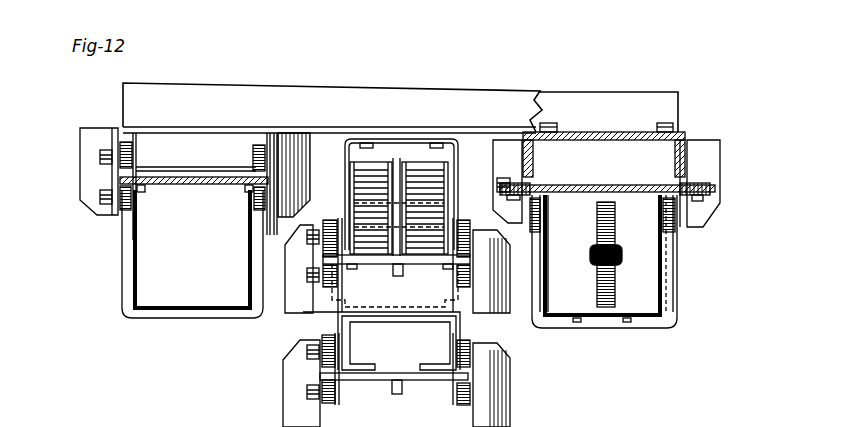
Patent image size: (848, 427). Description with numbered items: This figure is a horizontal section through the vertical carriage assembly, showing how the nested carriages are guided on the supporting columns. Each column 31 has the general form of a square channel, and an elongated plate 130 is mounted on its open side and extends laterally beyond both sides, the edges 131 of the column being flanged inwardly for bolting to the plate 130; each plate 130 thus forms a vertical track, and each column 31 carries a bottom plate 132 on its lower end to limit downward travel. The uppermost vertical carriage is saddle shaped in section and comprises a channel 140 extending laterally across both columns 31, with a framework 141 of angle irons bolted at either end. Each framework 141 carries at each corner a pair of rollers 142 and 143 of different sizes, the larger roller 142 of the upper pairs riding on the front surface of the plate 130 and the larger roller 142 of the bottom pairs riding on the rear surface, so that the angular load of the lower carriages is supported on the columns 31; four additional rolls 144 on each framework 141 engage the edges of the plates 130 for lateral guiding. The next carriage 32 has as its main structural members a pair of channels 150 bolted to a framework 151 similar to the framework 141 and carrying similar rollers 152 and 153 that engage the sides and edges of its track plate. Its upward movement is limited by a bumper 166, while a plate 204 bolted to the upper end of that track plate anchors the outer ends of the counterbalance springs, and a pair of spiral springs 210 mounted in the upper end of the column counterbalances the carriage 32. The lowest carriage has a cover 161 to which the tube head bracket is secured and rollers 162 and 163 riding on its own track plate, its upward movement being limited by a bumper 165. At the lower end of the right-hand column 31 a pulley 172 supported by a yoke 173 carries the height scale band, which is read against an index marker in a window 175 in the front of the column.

The channel 140 is at (317, 90).
The framework 141 is at (560, 134).
The roller 142 is at (120, 132).
The roller 143 is at (122, 188).
The roll 144 is at (713, 192).
The plate 130 is at (182, 185).
The edge 131 is at (157, 195).
The bottom plate 132 is at (125, 298).
The column 31 is at (131, 260).
The carriage 32 is at (478, 318).
The spiral spring 210 is at (412, 170).
The plate 204 is at (380, 264).
The bumper 166 is at (401, 274).
The roller 152 is at (287, 300).
The roller 153 is at (320, 250).
The framework 151 is at (465, 324).
The channel 150 is at (450, 330).
The cover 161 is at (369, 381).
The roller 162 is at (323, 360).
The roller 163 is at (322, 393).
The bumper 165 is at (401, 392).
The pulley 172 is at (608, 278).
The yoke 173 is at (623, 248).
The window 175 is at (610, 318).